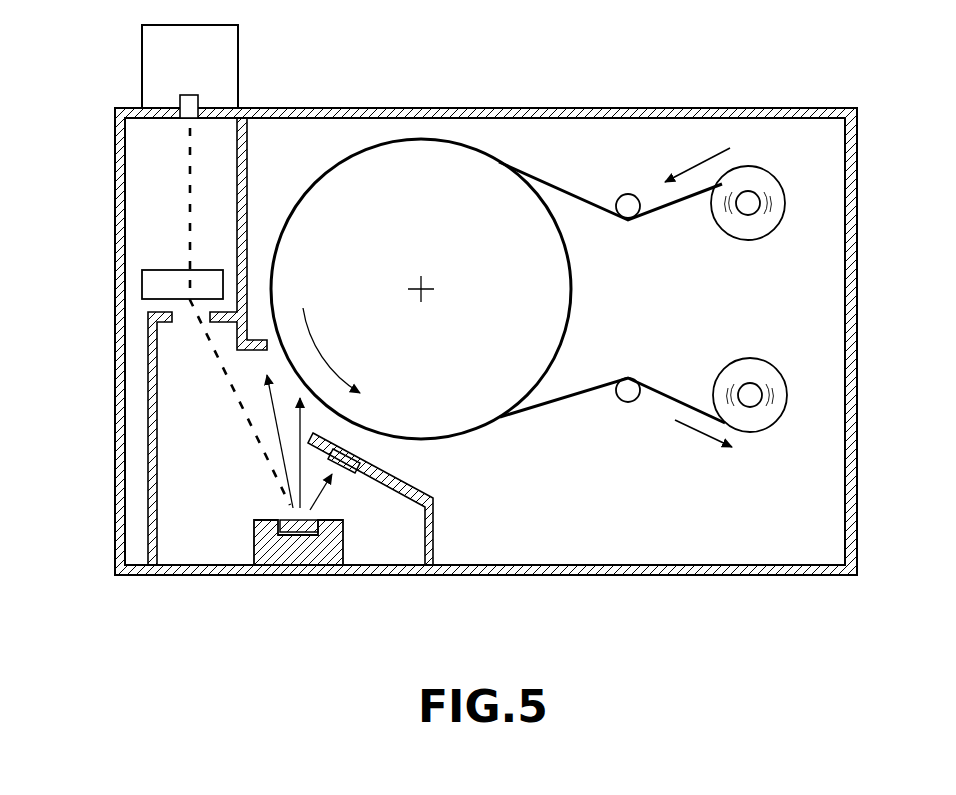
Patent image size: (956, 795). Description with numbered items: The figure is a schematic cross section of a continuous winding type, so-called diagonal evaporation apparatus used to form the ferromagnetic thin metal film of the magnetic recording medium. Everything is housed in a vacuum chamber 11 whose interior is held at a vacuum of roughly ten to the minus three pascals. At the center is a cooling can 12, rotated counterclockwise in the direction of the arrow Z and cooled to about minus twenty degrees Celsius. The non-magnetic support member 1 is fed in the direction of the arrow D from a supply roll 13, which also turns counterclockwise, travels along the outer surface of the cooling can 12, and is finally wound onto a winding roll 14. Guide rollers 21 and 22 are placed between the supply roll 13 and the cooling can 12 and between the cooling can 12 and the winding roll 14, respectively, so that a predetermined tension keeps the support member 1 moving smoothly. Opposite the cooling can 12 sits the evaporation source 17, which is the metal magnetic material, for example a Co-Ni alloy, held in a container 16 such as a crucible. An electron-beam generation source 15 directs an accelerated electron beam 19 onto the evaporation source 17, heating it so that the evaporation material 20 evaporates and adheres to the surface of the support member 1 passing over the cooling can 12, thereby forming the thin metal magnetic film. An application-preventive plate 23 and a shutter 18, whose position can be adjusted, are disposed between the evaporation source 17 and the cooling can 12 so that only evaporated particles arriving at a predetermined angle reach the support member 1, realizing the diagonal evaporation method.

The non-magnetic support member 1 is at (533, 177).
The vacuum chamber 11 is at (717, 547).
The cooling can 12 is at (427, 163).
The supply roll 13 is at (752, 177).
The winding roll 14 is at (765, 418).
The electron-beam generation source 15 is at (220, 70).
The container 16 is at (330, 548).
The evaporation source 17 is at (281, 532).
The shutter 18 is at (352, 470).
The electron beam 19 is at (188, 170).
The evaporation material 20 is at (318, 497).
The guide roller 21 is at (628, 203).
The guide roller 22 is at (628, 393).
The application-preventive plate 23 is at (420, 482).
The arrow D is at (703, 158).
The arrow Z is at (317, 342).